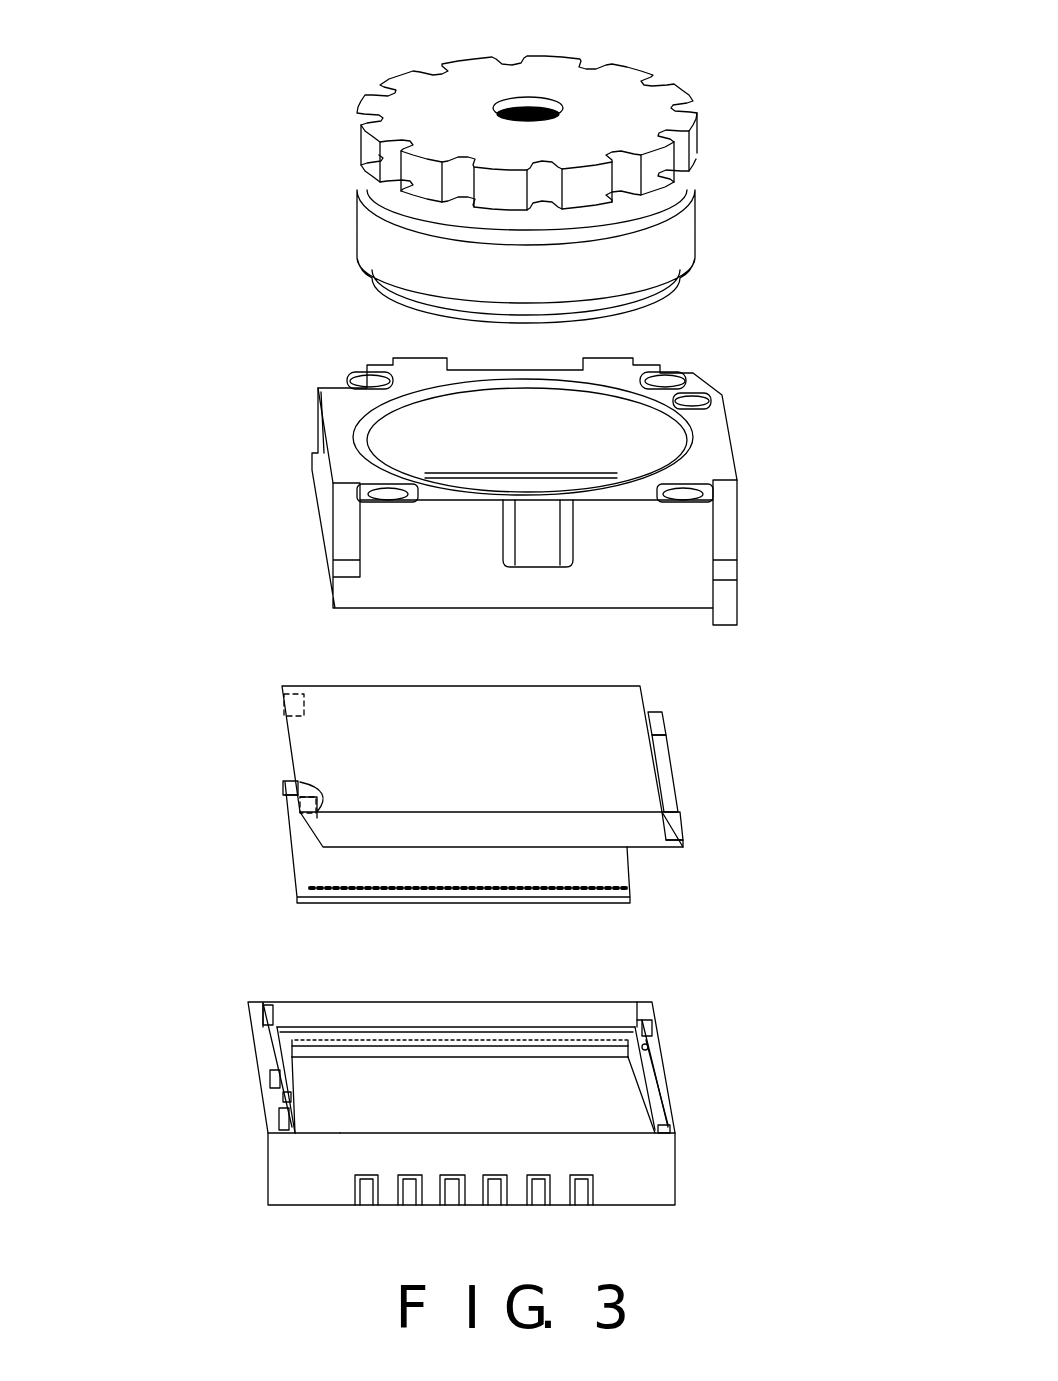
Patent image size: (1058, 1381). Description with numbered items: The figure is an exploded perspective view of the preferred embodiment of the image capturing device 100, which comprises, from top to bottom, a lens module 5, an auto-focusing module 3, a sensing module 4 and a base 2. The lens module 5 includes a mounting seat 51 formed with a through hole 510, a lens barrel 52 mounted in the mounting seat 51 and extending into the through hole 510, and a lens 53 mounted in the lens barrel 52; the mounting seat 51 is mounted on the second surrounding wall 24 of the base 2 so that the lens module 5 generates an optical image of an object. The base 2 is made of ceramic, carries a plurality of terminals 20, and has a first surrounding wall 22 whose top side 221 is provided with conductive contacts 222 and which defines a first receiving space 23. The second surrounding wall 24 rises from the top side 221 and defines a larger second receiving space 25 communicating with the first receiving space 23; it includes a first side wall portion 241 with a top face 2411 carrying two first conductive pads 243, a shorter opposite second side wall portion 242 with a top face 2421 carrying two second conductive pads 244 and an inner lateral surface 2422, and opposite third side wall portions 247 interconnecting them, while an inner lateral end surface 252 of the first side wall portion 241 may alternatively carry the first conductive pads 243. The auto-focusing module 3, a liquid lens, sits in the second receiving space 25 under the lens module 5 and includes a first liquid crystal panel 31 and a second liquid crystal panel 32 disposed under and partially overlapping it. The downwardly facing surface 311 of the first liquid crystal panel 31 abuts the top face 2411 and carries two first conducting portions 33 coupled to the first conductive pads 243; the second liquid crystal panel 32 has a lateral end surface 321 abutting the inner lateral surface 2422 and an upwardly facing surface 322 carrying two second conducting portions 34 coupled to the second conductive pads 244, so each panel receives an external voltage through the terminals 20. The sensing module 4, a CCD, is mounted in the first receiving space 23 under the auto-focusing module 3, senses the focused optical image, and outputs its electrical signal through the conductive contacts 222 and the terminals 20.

The image capturing device 100 is at (781, 315).
The lens module 5 is at (685, 320).
The mounting seat 51 is at (358, 398).
The through hole 510 is at (632, 443).
The lens barrel 52 is at (402, 226).
The lens 53 is at (523, 107).
The auto-focusing module 3 is at (347, 661).
The first liquid crystal panel 31 is at (338, 696).
The downwardly facing surface 311 is at (300, 778).
The second liquid crystal panel 32 is at (650, 840).
The lateral end surface 321 is at (685, 842).
The upwardly facing surface 322 is at (665, 770).
The first conducting portions 33 is at (282, 704).
The second conducting portions 34 is at (658, 722).
The sensing module 4 is at (315, 877).
The base 2 is at (223, 972).
The terminals 20 is at (497, 1187).
The first surrounding wall 22 is at (502, 1050).
The top side 221 is at (636, 1037).
The conductive contacts 222 is at (422, 1037).
The first receiving space 23 is at (527, 1114).
The second surrounding wall 24 is at (570, 1002).
The first side wall portion 241 is at (257, 1042).
The top face 2411 is at (287, 1082).
The second side wall portion 242 is at (672, 1113).
The top face 2421 is at (656, 1082).
The inner lateral surface 2422 is at (647, 1058).
The first conductive pads 243 is at (267, 1013).
The second conductive pads 244 is at (650, 1036).
The third side wall portions 247 is at (305, 1010).
The second receiving space 25 is at (544, 1016).
The inner lateral end surface 252 is at (292, 1095).